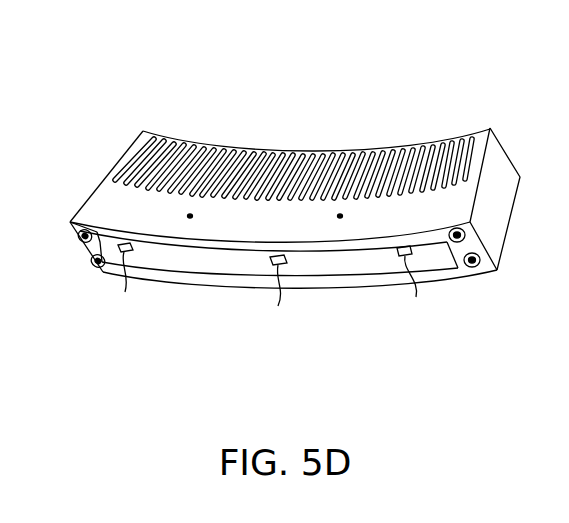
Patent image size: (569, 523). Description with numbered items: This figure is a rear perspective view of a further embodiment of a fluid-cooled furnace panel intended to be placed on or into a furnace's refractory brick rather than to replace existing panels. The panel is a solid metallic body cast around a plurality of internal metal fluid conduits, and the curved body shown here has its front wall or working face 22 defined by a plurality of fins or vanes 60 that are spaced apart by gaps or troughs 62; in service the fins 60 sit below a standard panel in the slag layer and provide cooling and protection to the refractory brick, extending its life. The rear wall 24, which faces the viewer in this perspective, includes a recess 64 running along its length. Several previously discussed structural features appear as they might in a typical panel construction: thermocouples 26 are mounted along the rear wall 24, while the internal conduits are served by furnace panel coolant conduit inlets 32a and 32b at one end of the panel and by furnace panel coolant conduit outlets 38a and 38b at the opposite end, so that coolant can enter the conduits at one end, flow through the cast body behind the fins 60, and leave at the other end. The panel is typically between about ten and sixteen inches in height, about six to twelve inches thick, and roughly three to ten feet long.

The front wall or working face 22 is at (345, 146).
The rear wall 24 is at (343, 286).
The thermocouples 26 is at (132, 250).
The furnace panel coolant conduit inlet 32a is at (84, 229).
The furnace panel coolant conduit inlet 32b is at (101, 271).
The furnace panel coolant conduit outlet 38a is at (466, 231).
The furnace panel coolant conduit outlet 38b is at (474, 268).
The fins or vanes 60 is at (222, 138).
The gaps or troughs 62 is at (150, 160).
The recess 64 is at (242, 262).